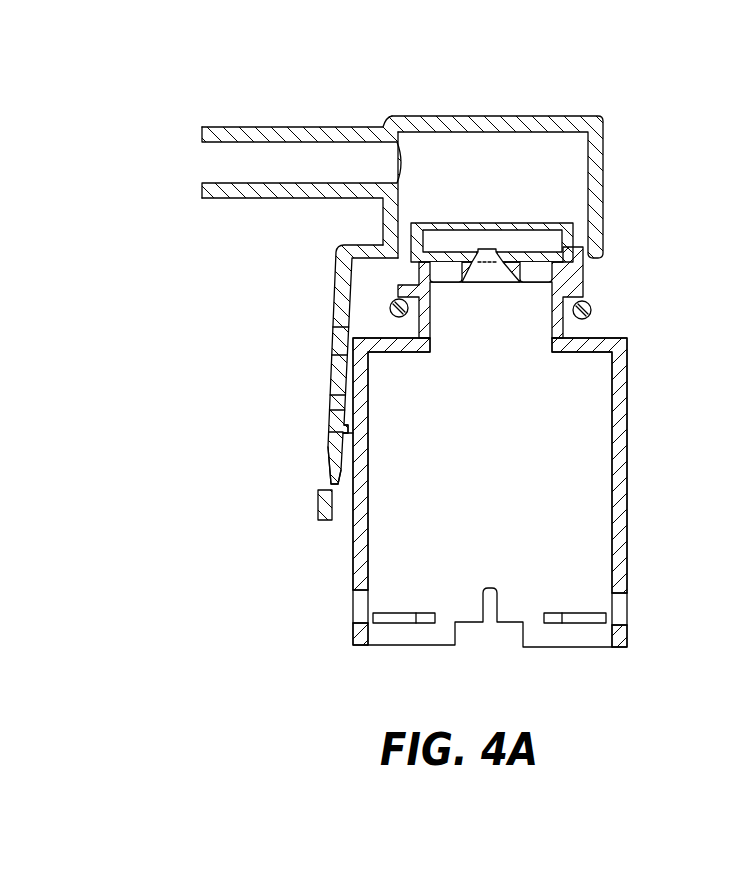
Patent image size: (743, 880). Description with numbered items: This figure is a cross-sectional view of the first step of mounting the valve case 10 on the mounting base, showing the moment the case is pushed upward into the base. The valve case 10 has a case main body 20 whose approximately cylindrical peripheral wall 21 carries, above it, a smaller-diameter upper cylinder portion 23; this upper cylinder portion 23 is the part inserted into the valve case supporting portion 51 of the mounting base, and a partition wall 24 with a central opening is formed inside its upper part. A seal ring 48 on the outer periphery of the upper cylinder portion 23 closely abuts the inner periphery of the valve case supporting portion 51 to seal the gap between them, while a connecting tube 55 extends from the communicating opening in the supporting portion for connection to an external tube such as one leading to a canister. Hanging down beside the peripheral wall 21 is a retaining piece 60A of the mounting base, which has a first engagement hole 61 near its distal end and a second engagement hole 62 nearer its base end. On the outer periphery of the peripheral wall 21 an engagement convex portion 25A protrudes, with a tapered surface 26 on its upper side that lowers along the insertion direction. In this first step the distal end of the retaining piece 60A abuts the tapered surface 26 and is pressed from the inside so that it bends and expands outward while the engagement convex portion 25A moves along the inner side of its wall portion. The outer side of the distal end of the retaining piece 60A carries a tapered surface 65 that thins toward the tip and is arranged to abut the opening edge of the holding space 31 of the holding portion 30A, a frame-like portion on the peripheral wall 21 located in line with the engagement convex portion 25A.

The valve case 10 is at (446, 272).
The connecting tube 55 is at (315, 127).
The valve case supporting portion 51 is at (603, 162).
The partition wall 24 is at (527, 255).
The upper cylinder portion 23 is at (565, 275).
The seal ring 48 is at (592, 310).
The second engagement hole 62 is at (338, 328).
The retaining piece 60A is at (318, 374).
The first engagement hole 61 is at (332, 407).
The tapered surface 26 is at (347, 428).
The engagement convex portion 25A is at (344, 432).
The tapered surface 65 is at (327, 463).
The holding portion 30A is at (317, 503).
The holding space 31 is at (343, 510).
The case main body 20 is at (490, 492).
The peripheral wall 21 is at (617, 460).